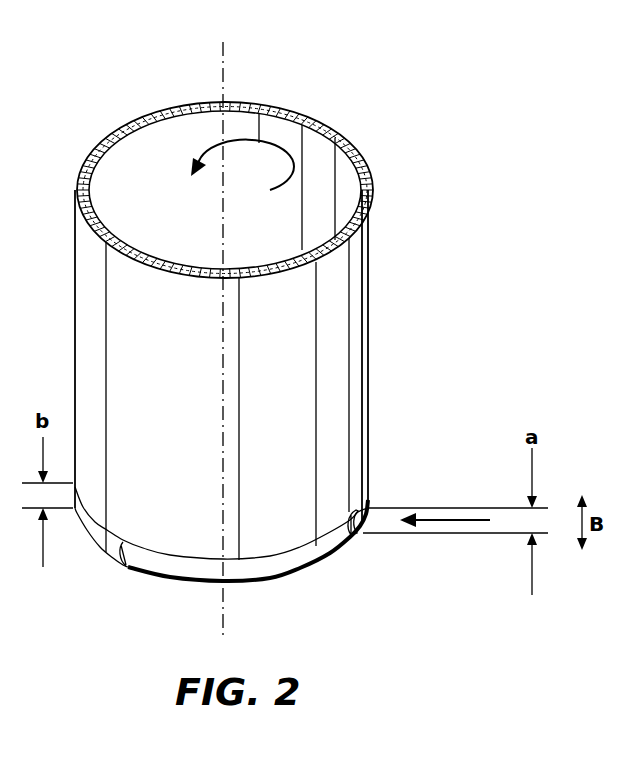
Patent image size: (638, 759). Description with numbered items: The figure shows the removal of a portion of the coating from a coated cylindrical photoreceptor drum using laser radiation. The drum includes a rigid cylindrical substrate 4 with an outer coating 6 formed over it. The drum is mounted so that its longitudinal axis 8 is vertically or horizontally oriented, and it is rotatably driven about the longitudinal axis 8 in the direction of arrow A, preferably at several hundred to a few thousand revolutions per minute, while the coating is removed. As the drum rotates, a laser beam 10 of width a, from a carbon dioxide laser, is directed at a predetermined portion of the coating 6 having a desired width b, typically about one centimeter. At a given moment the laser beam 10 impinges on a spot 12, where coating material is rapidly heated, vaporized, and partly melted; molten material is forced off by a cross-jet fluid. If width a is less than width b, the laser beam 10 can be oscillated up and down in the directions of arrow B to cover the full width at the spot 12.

The rigid cylindrical substrate 4 is at (178, 567).
The outer coating 6 is at (100, 528).
The longitudinal axis 8 is at (230, 75).
The laser beam 10 is at (450, 508).
The spot 12 is at (357, 538).